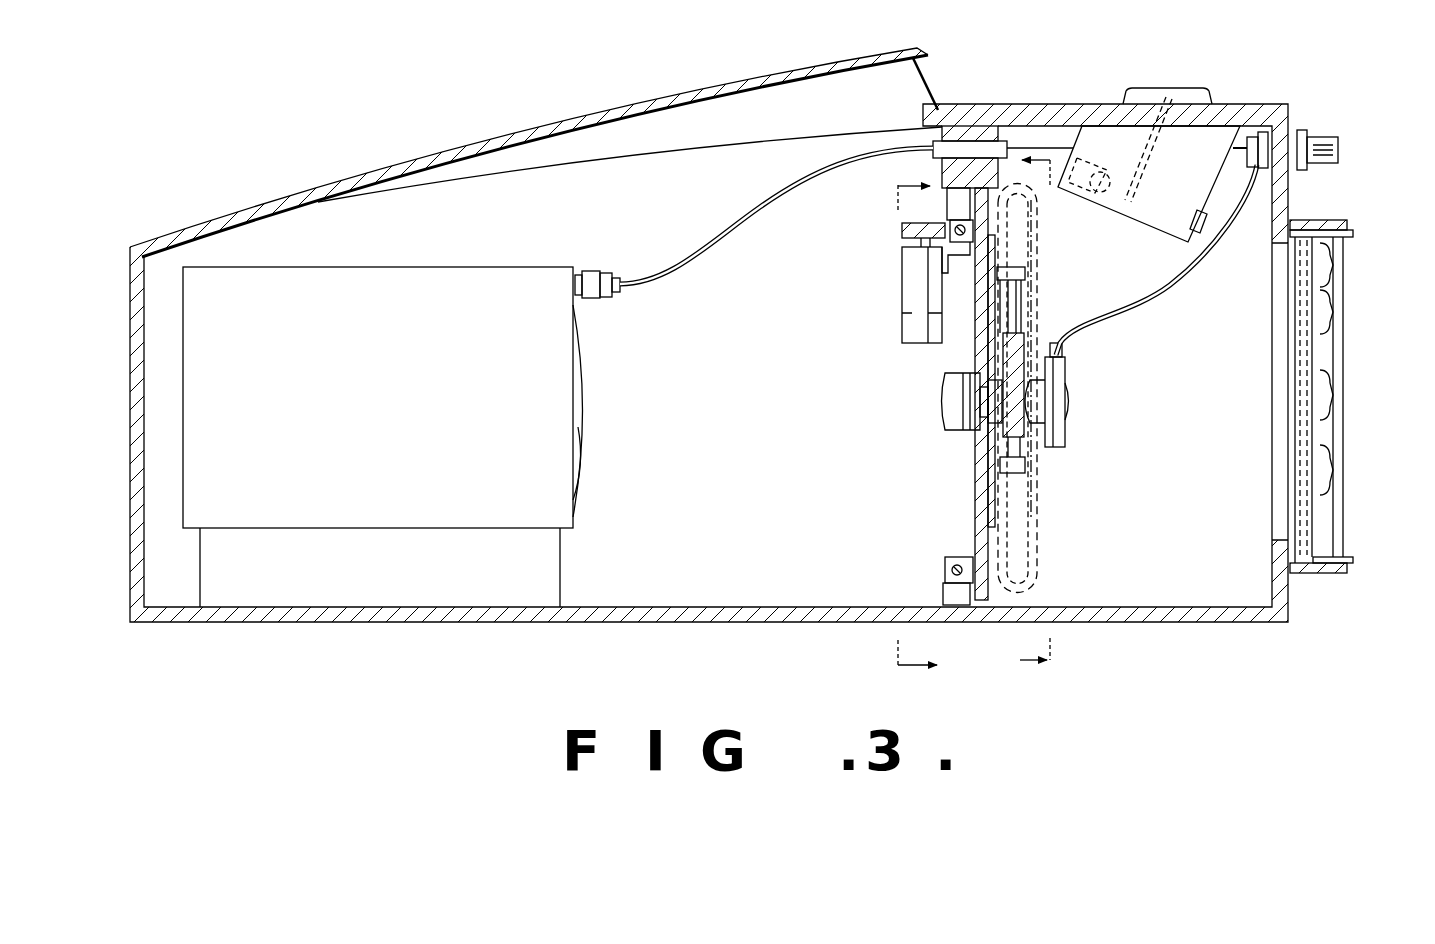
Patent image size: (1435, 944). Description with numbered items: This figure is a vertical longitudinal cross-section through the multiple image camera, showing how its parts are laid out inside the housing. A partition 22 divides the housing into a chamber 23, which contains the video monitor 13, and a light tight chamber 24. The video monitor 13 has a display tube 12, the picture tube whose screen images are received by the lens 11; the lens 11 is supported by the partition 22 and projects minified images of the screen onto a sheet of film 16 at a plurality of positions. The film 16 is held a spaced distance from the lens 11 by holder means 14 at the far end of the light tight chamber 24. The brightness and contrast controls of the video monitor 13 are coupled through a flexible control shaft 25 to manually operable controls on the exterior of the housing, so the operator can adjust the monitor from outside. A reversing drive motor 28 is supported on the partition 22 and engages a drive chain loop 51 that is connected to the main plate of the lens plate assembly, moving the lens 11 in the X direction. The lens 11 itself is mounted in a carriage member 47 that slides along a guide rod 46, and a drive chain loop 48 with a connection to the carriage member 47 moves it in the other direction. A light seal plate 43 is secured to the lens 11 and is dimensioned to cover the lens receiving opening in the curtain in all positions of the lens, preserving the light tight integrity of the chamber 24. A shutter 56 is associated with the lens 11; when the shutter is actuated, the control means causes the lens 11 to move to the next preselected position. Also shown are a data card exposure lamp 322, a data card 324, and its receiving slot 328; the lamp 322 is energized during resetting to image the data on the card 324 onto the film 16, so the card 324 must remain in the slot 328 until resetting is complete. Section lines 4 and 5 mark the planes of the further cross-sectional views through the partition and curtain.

The section line 4- 4 is at (1034, 410).
The section line 5- 5 is at (919, 426).
The lens 11 is at (942, 415).
The display tube 12 is at (583, 430).
The video monitor 13 is at (380, 412).
The holder means 14 is at (1339, 363).
The sheet of film 16 is at (1310, 297).
The partition 22 is at (972, 133).
The chamber 23 is at (771, 538).
The light tight chamber 24 is at (1183, 535).
The control shaft 25 is at (762, 218).
The first reversing drive motor 28 is at (907, 288).
The light seal plate 43 is at (992, 268).
The guide rod 46 is at (1015, 305).
The carriage member 47 is at (1052, 375).
The drive chain loop 48 is at (1035, 540).
The drive chain loop 51 is at (902, 230).
The shutter 56 is at (1062, 445).
The data card exposure lamp 322 is at (1093, 197).
The data card 324 is at (1172, 90).
The receiving slot 328 is at (1145, 156).